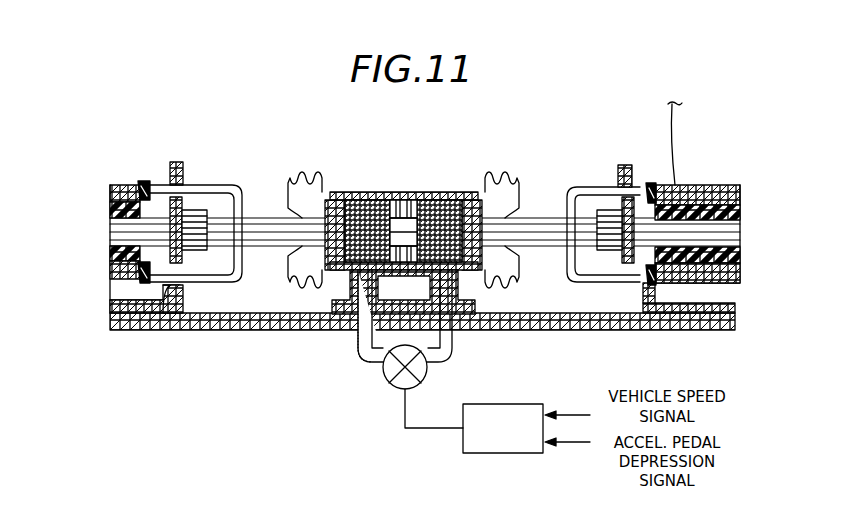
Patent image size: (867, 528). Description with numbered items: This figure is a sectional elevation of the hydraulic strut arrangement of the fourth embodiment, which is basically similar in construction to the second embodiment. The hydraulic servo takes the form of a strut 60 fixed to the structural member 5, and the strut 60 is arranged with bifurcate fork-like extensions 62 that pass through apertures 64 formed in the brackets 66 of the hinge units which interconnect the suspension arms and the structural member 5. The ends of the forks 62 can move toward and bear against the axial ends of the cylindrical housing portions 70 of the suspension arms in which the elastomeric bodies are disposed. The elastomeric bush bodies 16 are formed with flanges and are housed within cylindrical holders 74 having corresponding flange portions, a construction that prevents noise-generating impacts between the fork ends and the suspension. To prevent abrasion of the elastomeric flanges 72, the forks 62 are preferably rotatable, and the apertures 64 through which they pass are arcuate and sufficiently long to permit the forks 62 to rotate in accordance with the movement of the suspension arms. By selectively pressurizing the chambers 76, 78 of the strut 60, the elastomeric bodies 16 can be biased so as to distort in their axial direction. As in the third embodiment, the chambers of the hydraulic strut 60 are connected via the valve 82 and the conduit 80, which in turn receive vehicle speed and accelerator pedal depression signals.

The structural member 5 is at (126, 330).
The elastomeric bush body 16 is at (116, 212).
The hydraulic strut 60 is at (403, 222).
The bifurcate fork-like extension 62 is at (240, 272).
The aperture 64 is at (190, 187).
The bracket 66 is at (176, 162).
The cylindrical housing portion 70 is at (116, 192).
The elastomeric flange 72 is at (148, 288).
The cylindrical holder 74 is at (118, 268).
The strut chamber 76 is at (362, 200).
The strut chamber 78 is at (437, 204).
The conduit 80 is at (355, 362).
The valve 82 is at (397, 380).